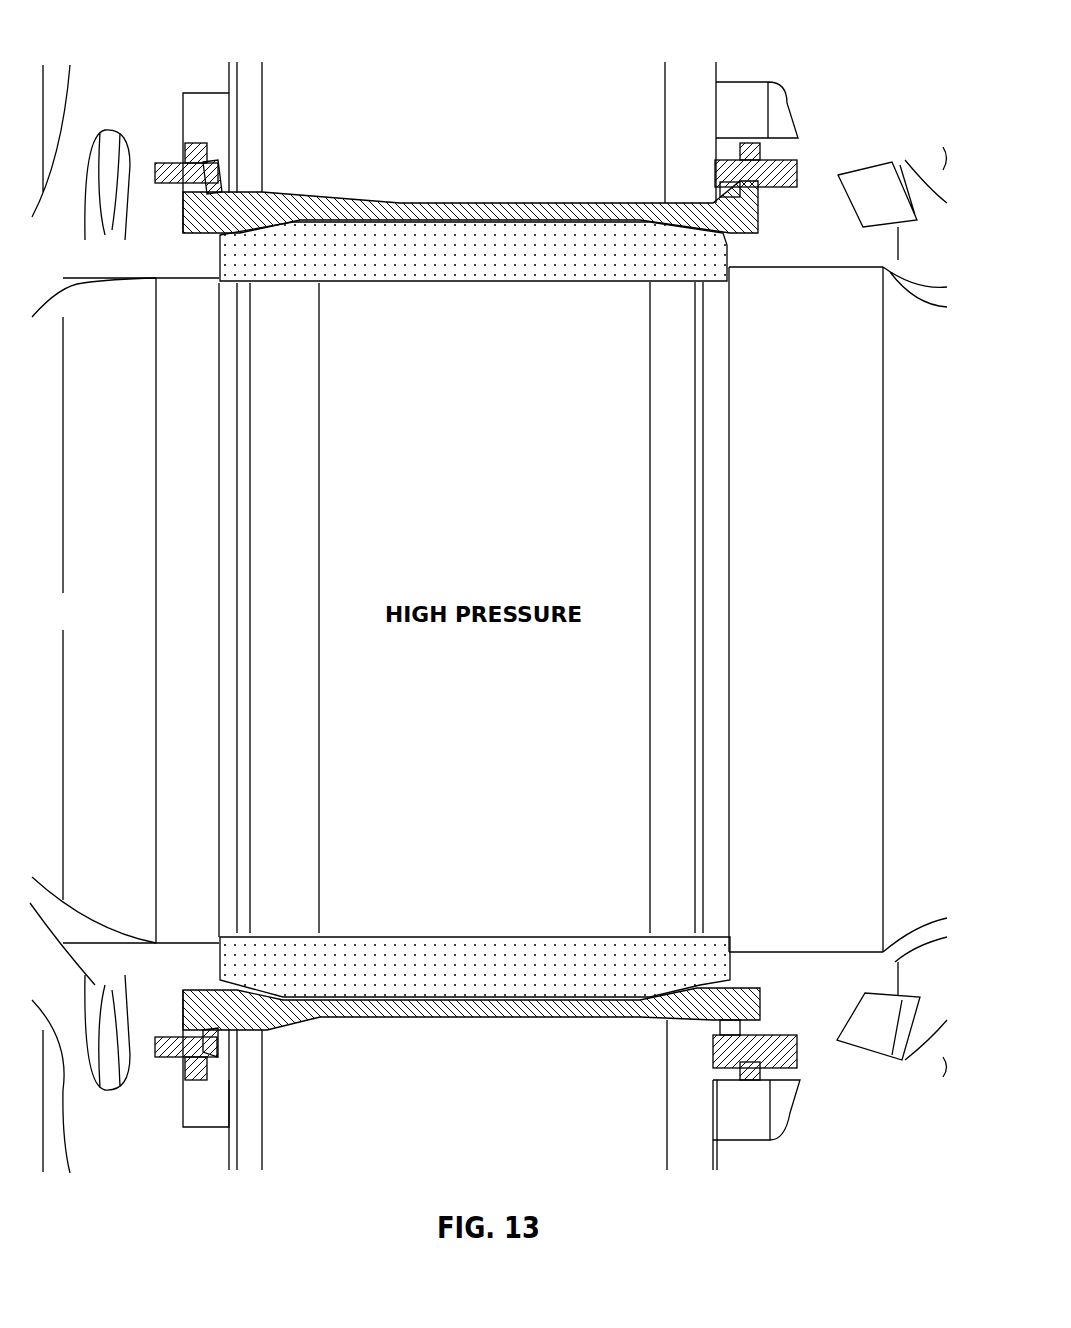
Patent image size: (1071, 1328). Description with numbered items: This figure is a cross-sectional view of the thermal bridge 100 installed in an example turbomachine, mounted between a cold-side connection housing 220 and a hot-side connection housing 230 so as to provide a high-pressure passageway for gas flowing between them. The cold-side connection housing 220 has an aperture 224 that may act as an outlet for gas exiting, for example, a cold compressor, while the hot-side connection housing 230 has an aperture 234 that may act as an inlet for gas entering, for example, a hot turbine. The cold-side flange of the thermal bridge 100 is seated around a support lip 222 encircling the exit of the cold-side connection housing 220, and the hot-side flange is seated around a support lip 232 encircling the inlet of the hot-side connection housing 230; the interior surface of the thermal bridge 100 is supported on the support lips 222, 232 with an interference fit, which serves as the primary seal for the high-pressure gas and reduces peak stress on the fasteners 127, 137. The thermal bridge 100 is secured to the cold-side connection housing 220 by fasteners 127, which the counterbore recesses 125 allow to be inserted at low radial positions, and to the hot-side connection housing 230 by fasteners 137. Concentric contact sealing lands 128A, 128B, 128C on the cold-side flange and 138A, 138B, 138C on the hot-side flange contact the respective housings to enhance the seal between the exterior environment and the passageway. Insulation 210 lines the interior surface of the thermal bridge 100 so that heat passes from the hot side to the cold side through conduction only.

The thermal bridge 100 is at (486, 202).
The counterbore recess 125 is at (225, 187).
The fastener 127 is at (167, 167).
The fastener 137 is at (797, 162).
The first contact sealing land 128A is at (207, 1078).
The second contact sealing land 128B is at (203, 1030).
The third contact sealing land 128C is at (188, 1000).
The first contact sealing land 138A is at (748, 1078).
The second contact sealing land 138B is at (717, 1041).
The third contact sealing land 138C is at (757, 993).
The insulation 210 is at (495, 262).
The cold-side connection housing 220 is at (127, 1157).
The support lip 222 is at (197, 250).
The aperture 224 is at (150, 663).
The hot-side connection housing 230 is at (822, 1152).
The support lip 232 is at (747, 252).
The aperture 234 is at (823, 661).